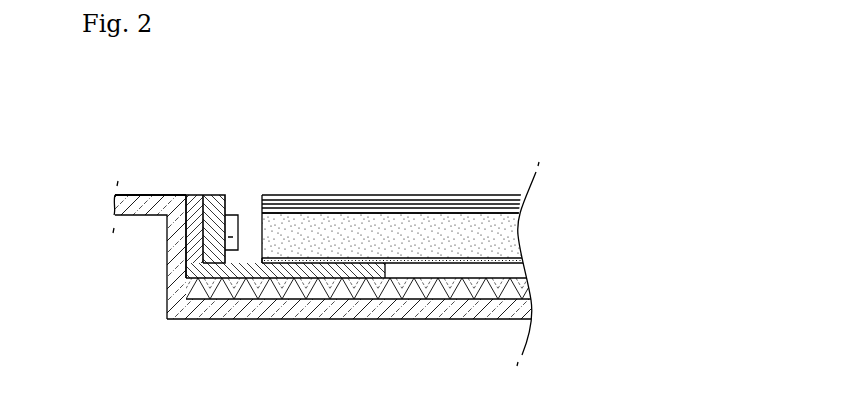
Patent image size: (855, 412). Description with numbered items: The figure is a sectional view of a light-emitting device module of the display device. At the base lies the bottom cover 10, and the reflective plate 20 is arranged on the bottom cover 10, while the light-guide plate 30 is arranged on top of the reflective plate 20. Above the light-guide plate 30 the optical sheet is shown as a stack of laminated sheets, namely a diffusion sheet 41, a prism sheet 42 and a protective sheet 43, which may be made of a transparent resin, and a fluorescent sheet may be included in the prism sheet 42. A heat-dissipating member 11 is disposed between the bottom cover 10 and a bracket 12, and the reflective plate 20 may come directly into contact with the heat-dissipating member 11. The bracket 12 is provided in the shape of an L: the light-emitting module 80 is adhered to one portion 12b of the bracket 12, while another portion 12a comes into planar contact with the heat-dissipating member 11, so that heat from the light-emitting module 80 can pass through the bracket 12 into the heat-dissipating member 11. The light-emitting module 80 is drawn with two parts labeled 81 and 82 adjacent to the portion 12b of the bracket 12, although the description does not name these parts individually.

The bottom cover 10 is at (483, 312).
The heat-dissipating member 11 is at (450, 290).
The bracket 12 is at (285, 187).
The another portion of the bracket 12a is at (247, 267).
The one portion of the bracket 12b is at (196, 203).
The reflective plate 20 is at (477, 260).
The light-guide plate 30 is at (437, 233).
The diffusion sheet 41 is at (520, 210).
The prism sheet 42 is at (522, 205).
The protective sheet 43 is at (524, 199).
The light-emitting module 80 is at (156, 260).
The first fixing portion 81 is at (216, 223).
The second fixing portion 82 is at (222, 238).